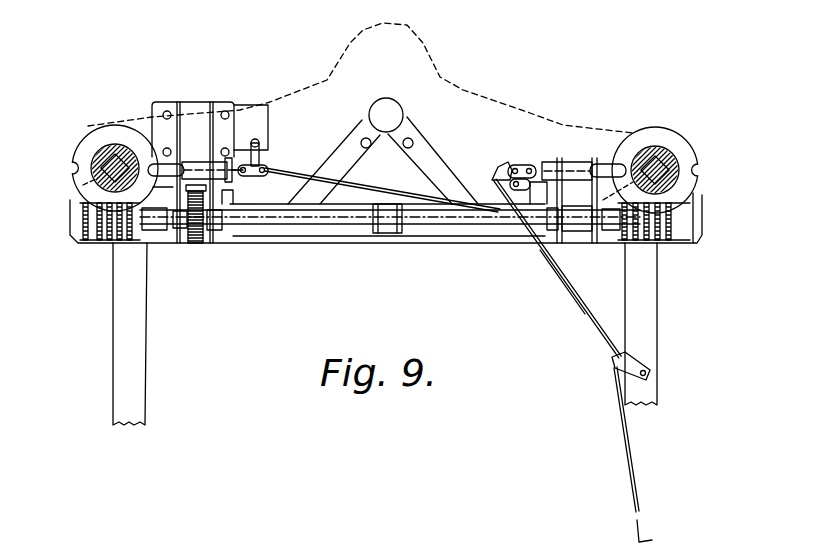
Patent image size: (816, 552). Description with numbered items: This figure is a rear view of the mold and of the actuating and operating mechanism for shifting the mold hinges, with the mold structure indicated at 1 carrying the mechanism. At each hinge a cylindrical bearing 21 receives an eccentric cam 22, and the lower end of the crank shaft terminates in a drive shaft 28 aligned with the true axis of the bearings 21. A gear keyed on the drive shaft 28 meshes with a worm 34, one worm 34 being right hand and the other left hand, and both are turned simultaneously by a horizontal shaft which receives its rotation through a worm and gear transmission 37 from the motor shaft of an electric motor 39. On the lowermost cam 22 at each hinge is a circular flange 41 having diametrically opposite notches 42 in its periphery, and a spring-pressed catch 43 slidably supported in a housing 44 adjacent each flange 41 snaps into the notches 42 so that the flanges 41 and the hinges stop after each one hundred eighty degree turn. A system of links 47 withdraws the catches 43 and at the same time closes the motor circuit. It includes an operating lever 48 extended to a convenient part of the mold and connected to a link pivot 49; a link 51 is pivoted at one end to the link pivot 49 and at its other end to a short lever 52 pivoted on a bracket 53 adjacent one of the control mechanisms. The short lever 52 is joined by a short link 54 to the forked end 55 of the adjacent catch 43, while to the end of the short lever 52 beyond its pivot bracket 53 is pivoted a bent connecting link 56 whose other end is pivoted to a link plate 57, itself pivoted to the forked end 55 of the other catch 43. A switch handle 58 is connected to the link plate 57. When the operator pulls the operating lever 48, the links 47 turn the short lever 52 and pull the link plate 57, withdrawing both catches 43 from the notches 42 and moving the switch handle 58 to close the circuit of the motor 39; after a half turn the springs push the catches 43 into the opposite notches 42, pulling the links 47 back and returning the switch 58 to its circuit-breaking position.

The frame / base 1 is at (140, 345).
The cylindrical bearing 21 is at (100, 148).
The eccentric cam 22 is at (678, 163).
The drive shaft 28 is at (95, 180).
The worm 34 is at (108, 242).
The worm and gear transmission 37 is at (195, 246).
The electric motor 39 is at (292, 207).
The circular flange 41 is at (114, 128).
The notch 42 is at (73, 169).
The catch 43 is at (152, 163).
The housing 44 is at (195, 163).
The system of links 47 is at (544, 279).
The operating lever 48 is at (628, 470).
The link pivot 49 is at (645, 368).
The link 51 is at (583, 307).
The short lever 52 is at (505, 165).
The bracket 53 is at (513, 202).
The short link 54 is at (516, 165).
The forked end 55 is at (205, 187).
The connecting link 56 is at (378, 200).
The link plate 57 is at (268, 168).
The switch handle 58 is at (268, 143).